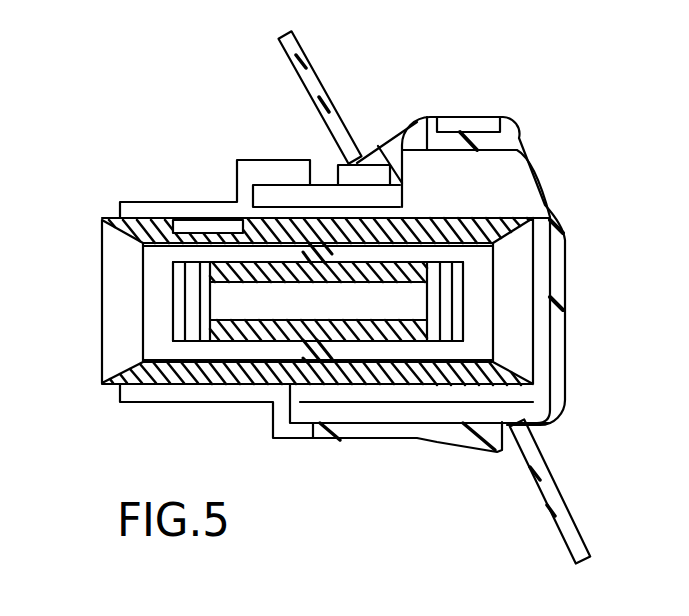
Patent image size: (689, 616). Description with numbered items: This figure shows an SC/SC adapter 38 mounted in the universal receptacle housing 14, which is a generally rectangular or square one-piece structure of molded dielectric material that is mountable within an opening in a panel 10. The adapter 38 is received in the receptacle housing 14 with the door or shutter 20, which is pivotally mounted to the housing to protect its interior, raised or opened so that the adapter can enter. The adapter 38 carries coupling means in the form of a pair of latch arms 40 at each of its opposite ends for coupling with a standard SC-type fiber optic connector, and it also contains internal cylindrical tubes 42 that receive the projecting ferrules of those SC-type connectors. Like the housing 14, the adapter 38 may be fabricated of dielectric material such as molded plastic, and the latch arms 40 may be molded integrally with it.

The panel 10 is at (550, 503).
The universal receptacle housing 14 is at (257, 172).
The door or shutter 20 is at (557, 287).
The SC/SC adapter 38 is at (98, 384).
The latch arms 40 is at (190, 297).
The internal cylindrical tubes 42 is at (250, 332).